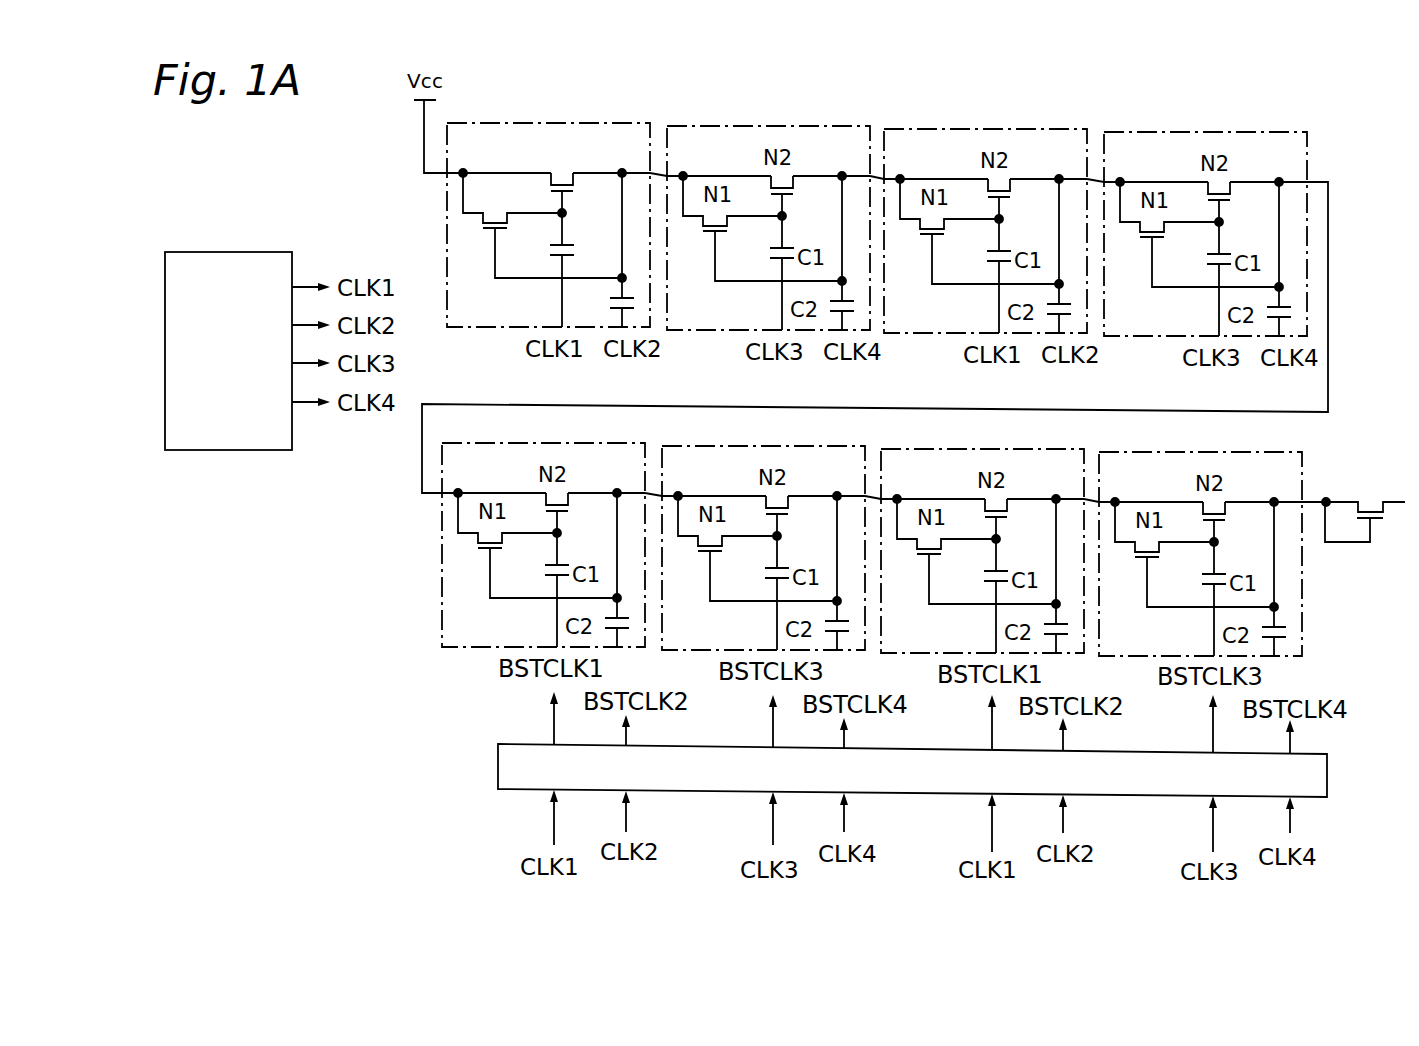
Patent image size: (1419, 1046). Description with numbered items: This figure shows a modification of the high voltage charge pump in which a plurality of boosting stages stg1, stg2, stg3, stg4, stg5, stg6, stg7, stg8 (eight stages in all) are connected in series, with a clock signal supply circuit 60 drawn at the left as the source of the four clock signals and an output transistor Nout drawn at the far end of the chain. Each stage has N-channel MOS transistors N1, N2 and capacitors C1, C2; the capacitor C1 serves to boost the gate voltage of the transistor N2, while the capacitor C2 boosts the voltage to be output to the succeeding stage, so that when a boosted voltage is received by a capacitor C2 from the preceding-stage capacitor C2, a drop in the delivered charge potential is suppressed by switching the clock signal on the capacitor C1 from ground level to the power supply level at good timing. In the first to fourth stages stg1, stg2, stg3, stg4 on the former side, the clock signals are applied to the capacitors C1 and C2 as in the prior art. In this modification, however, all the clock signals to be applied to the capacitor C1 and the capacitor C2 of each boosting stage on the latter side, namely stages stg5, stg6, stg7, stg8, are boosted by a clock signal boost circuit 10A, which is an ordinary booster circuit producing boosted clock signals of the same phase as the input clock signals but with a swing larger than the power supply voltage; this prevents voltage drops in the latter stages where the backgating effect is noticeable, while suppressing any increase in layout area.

The clock signal supply circuit 60 is at (228, 252).
The clock signal boost circuit 10A is at (1327, 776).
The N-channel MOS transistor N1 is at (489, 211).
The N-channel MOS transistor N2 is at (559, 172).
The capacitor C1 is at (574, 252).
The capacitor C2 is at (614, 300).
The output transistor Nout is at (1353, 507).
The boosting stage stg1 is at (548, 210).
The boosting stage stg2 is at (768, 213).
The boosting stage stg3 is at (985, 216).
The boosting stage stg4 is at (1205, 219).
The boosting stage stg5 is at (543, 530).
The boosting stage stg6 is at (763, 533).
The boosting stage stg7 is at (982, 536).
The boosting stage stg8 is at (1200, 539).